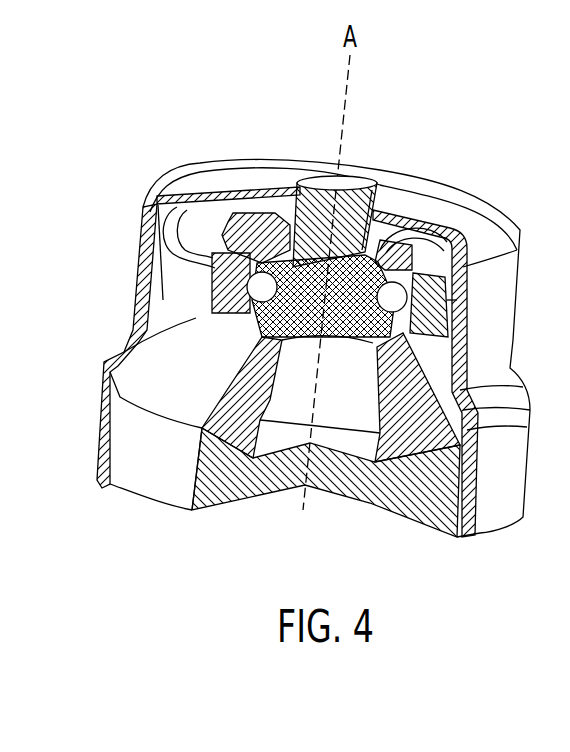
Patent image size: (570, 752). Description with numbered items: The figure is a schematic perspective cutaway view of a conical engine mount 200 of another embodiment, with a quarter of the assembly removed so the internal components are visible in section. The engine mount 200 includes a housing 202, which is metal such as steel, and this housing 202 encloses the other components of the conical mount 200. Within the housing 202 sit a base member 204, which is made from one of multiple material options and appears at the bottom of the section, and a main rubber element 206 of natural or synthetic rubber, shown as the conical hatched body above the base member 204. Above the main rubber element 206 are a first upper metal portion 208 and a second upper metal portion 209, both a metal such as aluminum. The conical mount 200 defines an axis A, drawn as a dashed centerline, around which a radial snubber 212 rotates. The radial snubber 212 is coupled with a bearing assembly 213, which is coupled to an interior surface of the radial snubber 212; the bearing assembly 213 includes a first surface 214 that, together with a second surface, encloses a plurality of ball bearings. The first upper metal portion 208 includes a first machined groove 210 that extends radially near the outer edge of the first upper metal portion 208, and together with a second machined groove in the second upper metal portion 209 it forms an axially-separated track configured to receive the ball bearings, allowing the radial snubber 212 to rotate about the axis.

The conical engine mount 200 is at (120, 157).
The housing 202 is at (427, 190).
The base member 204 is at (433, 493).
The main rubber element 206 is at (407, 430).
The first upper metal portion 208 is at (277, 203).
The second upper metal portion 209 is at (312, 197).
The first machined groove 210 is at (250, 306).
The radial snubber 212 is at (437, 297).
The bearing assembly 213 is at (398, 284).
The first surface 214 is at (237, 280).